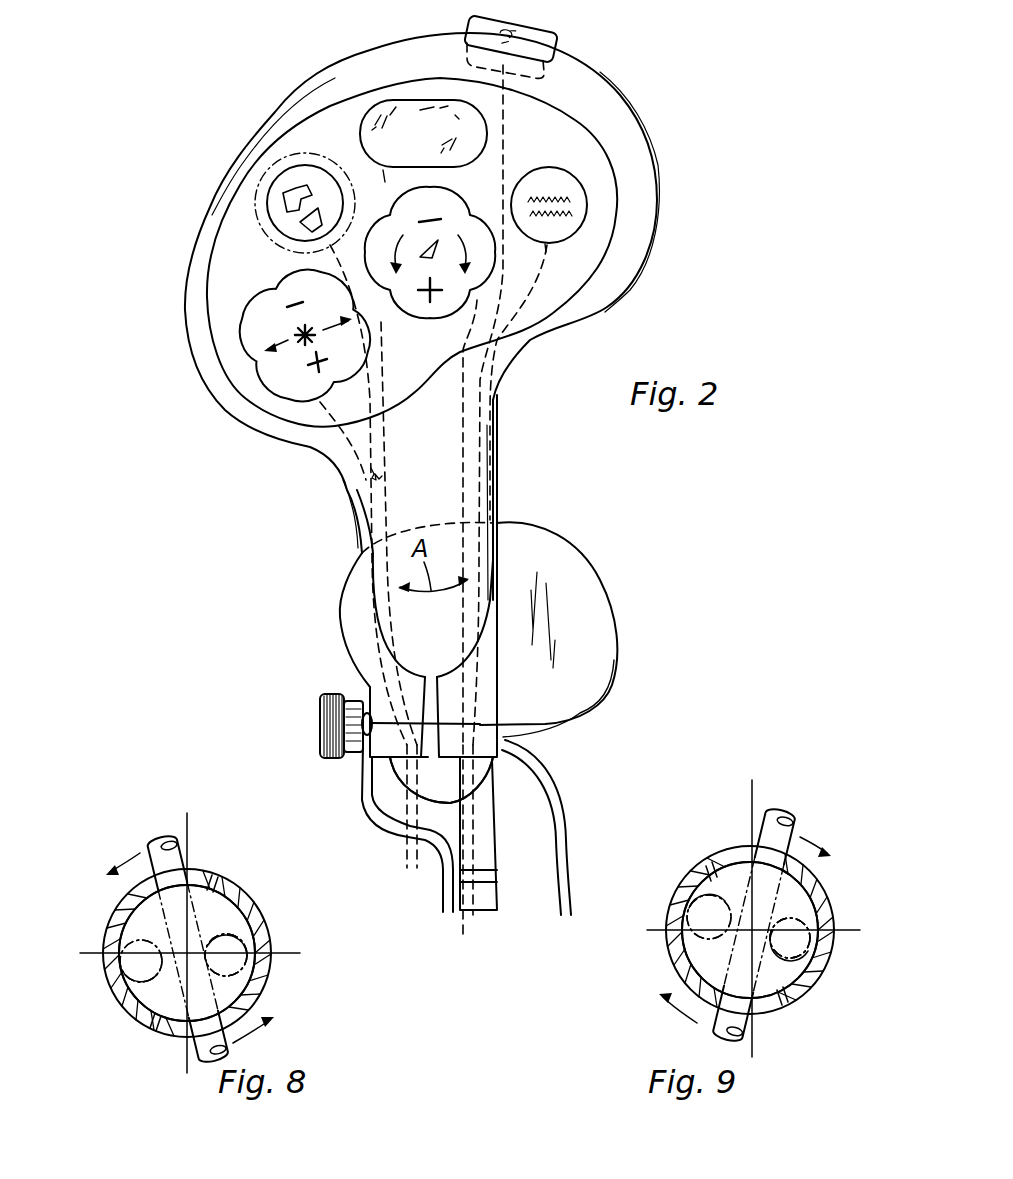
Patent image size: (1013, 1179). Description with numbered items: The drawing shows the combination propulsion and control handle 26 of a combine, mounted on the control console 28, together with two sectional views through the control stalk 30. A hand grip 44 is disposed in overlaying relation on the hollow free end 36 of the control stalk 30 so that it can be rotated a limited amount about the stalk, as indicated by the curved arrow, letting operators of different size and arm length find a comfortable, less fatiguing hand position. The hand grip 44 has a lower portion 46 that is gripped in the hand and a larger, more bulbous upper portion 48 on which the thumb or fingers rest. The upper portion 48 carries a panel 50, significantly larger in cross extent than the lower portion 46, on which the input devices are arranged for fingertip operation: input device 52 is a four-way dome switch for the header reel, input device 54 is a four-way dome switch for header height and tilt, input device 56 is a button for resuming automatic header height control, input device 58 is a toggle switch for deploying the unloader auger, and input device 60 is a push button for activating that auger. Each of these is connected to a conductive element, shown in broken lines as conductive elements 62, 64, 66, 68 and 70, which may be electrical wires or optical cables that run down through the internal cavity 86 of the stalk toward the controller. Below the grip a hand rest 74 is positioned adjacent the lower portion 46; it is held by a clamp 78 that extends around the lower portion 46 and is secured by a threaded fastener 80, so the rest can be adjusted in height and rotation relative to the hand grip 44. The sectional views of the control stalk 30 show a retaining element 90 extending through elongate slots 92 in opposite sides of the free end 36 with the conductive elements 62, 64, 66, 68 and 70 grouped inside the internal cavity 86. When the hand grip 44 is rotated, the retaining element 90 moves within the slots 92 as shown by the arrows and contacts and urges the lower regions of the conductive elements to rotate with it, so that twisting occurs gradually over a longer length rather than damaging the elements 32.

In FIG. 2, the combination propulsion and control handle 26 is at (610, 80).
In FIG. 2, the control console 28 is at (570, 807).
In FIG. 2, the control stalk 30 is at (490, 793).
In FIG. 8, the control stalk 30 is at (270, 975).
In FIG. 9, the control stalk 30 is at (815, 982).
In FIG. 2, the connector 32 is at (493, 863).
In FIG. 2, the free end 36 is at (441, 780).
In FIG. 2, the hand grip 44 is at (497, 407).
In FIG. 2, the lower portion 46 is at (497, 482).
In FIG. 2, the upper portion 48 is at (650, 240).
In FIG. 2, the panel 50 is at (597, 140).
In FIG. 2, the input device 52 is at (247, 360).
In FIG. 2, the input device 54 is at (420, 322).
In FIG. 2, the input device 56 is at (587, 210).
In FIG. 2, the input device 58 is at (390, 100).
In FIG. 2, the input device 60 is at (267, 183).
In FIG. 2, the conductive element 62 is at (337, 433).
In FIG. 8, the conductive element 62 is at (232, 936).
In FIG. 9, the conductive element 62 is at (800, 921).
In FIG. 2, the conductive element 64 is at (463, 360).
In FIG. 8, the conductive element 64 is at (226, 955).
In FIG. 9, the conductive element 64 is at (790, 938).
In FIG. 2, the conductive element 66 is at (537, 275).
In FIG. 8, the conductive element 66 is at (226, 955).
In FIG. 9, the conductive element 66 is at (790, 938).
In FIG. 2, the conductive element 68 is at (373, 187).
In FIG. 8, the conductive element 68 is at (157, 978).
In FIG. 9, the conductive element 68 is at (708, 941).
In FIG. 2, the conductive element 70 is at (352, 450).
In FIG. 8, the conductive element 70 is at (141, 961).
In FIG. 9, the conductive element 70 is at (709, 917).
In FIG. 2, the hand rest 74 is at (590, 557).
In FIG. 2, the clamp 78 is at (341, 637).
In FIG. 2, the threaded fastener 80 is at (320, 723).
In FIG. 8, the internal cavity 86 is at (220, 910).
In FIG. 9, the internal cavity 86 is at (795, 895).
In FIG. 8, the retaining element 90 is at (160, 846).
In FIG. 9, the retaining element 90 is at (765, 815).
In FIG. 8, the elongate slot 92 is at (200, 874).
In FIG. 9, the elongate slot 92 is at (735, 857).